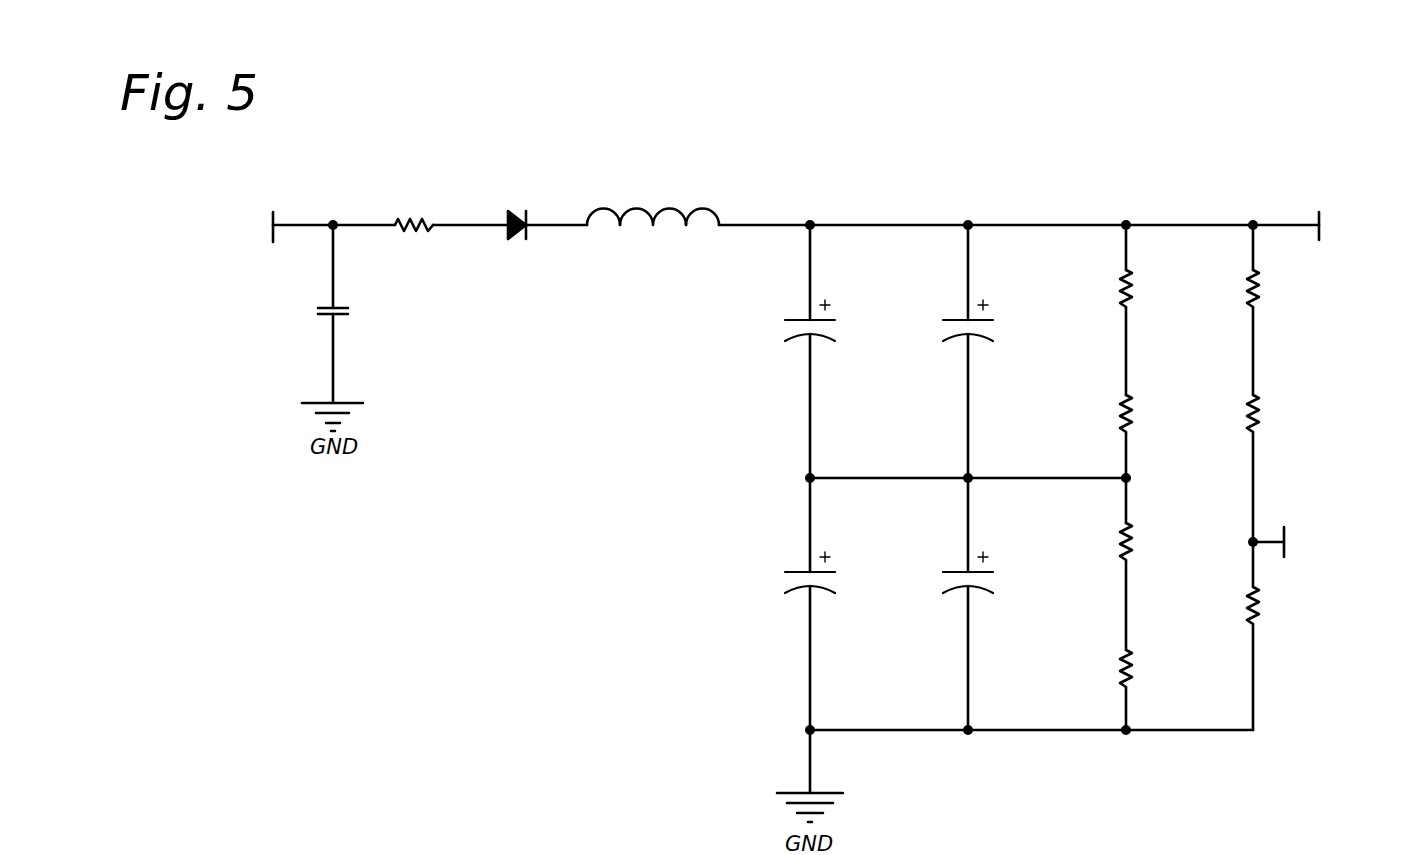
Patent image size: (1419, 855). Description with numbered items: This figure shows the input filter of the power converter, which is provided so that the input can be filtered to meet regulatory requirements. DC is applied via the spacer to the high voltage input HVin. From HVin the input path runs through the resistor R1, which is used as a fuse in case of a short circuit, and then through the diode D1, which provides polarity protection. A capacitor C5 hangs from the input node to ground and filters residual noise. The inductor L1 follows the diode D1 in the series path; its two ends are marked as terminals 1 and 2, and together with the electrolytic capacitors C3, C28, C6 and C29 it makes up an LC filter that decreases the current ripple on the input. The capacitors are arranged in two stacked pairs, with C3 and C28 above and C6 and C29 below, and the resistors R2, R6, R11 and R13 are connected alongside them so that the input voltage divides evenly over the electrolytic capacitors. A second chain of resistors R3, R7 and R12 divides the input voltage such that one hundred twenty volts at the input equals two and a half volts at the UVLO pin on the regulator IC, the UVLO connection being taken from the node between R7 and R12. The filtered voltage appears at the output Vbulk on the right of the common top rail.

The first terminal of inductor L1 1 is at (587, 224).
The second terminal of inductor L1 2 is at (717, 224).
The resistor R1 is at (414, 210).
The diode D1 is at (515, 212).
The inductor L1 is at (668, 205).
The capacitor C5 is at (350, 309).
The capacitor C3 is at (830, 323).
The capacitor C28 is at (993, 323).
The capacitor C6 is at (830, 575).
The capacitor C29 is at (993, 575).
The resistor R2 is at (1144, 288).
The resistor R3 is at (1271, 288).
The resistor R6 is at (1144, 413).
The resistor R7 is at (1272, 413).
The resistor R11 is at (1150, 541).
The resistor R12 is at (1278, 605).
The resistor R13 is at (1150, 668).
The high voltage input HVin is at (275, 227).
The filtered voltage Vbulk is at (1320, 227).
The UVLO pin UVLO is at (1302, 542).